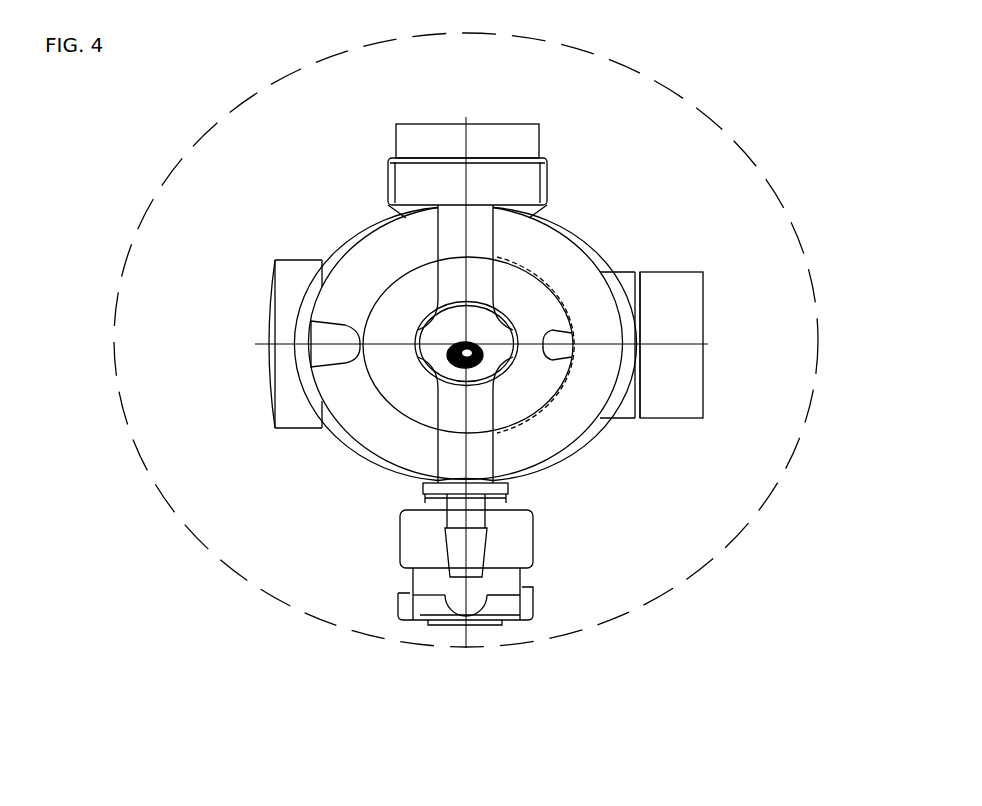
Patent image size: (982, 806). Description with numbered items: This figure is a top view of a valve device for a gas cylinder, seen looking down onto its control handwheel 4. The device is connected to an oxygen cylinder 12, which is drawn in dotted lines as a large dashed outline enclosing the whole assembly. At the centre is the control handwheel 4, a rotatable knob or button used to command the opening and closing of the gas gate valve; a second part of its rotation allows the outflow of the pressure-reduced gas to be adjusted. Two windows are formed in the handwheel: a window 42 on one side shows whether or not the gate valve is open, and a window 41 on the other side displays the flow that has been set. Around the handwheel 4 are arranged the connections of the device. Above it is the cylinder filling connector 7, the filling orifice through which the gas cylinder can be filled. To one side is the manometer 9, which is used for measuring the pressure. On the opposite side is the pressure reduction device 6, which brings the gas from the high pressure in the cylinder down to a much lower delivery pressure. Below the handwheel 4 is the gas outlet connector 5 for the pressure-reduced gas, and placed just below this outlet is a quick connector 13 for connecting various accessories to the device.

The oxygen cylinder 12 is at (725, 133).
The cylinder filling connector 7 is at (528, 172).
The control handwheel 4 is at (483, 282).
The window 42 is at (336, 323).
The window 41 is at (567, 358).
The manometer 9 is at (282, 268).
The pressure reduction device 6 is at (704, 328).
The quick connector 13 is at (408, 548).
The gas outlet connector 5 is at (478, 537).